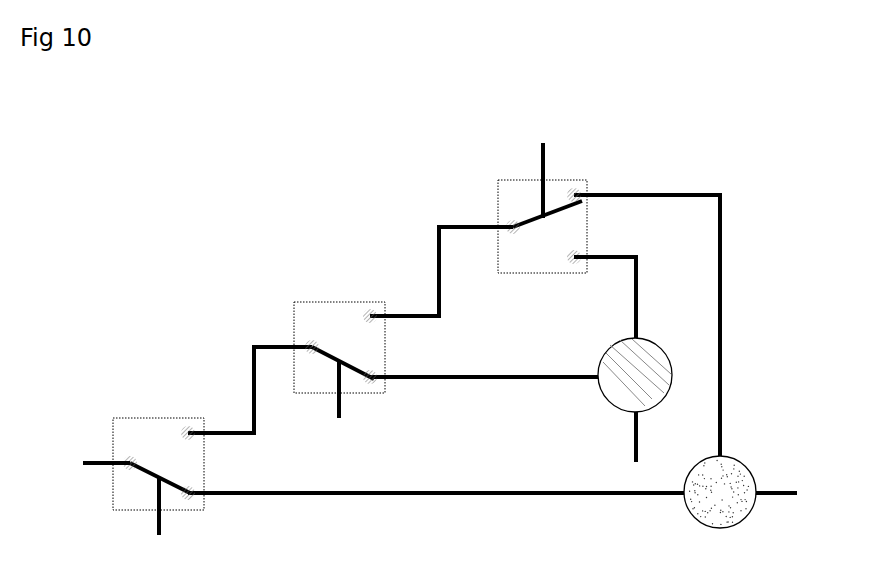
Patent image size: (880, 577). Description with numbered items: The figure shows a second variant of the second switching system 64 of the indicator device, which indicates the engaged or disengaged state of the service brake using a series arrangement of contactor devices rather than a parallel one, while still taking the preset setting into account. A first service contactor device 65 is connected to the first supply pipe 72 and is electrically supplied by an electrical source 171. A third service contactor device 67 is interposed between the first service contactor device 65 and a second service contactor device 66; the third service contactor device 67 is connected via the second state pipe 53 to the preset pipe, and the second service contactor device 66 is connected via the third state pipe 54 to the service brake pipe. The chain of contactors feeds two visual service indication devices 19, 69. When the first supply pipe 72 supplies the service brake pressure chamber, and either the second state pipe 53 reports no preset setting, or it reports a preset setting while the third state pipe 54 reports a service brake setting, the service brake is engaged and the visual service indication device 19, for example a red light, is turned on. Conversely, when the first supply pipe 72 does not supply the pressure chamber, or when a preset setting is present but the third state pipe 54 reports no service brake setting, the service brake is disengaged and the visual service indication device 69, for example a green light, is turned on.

The second switching system 64 is at (720, 148).
The third state pipe 54 is at (539, 160).
The second service contactor device 66 is at (581, 179).
The third service contactor device 67 is at (301, 302).
The first service contactor device 65 is at (127, 418).
The second state pipe 53 is at (337, 412).
The first supply pipe 72 is at (157, 534).
The electrical source 171 is at (87, 465).
The visual service indication device 19 is at (660, 349).
The visual service indication device 69 is at (748, 468).